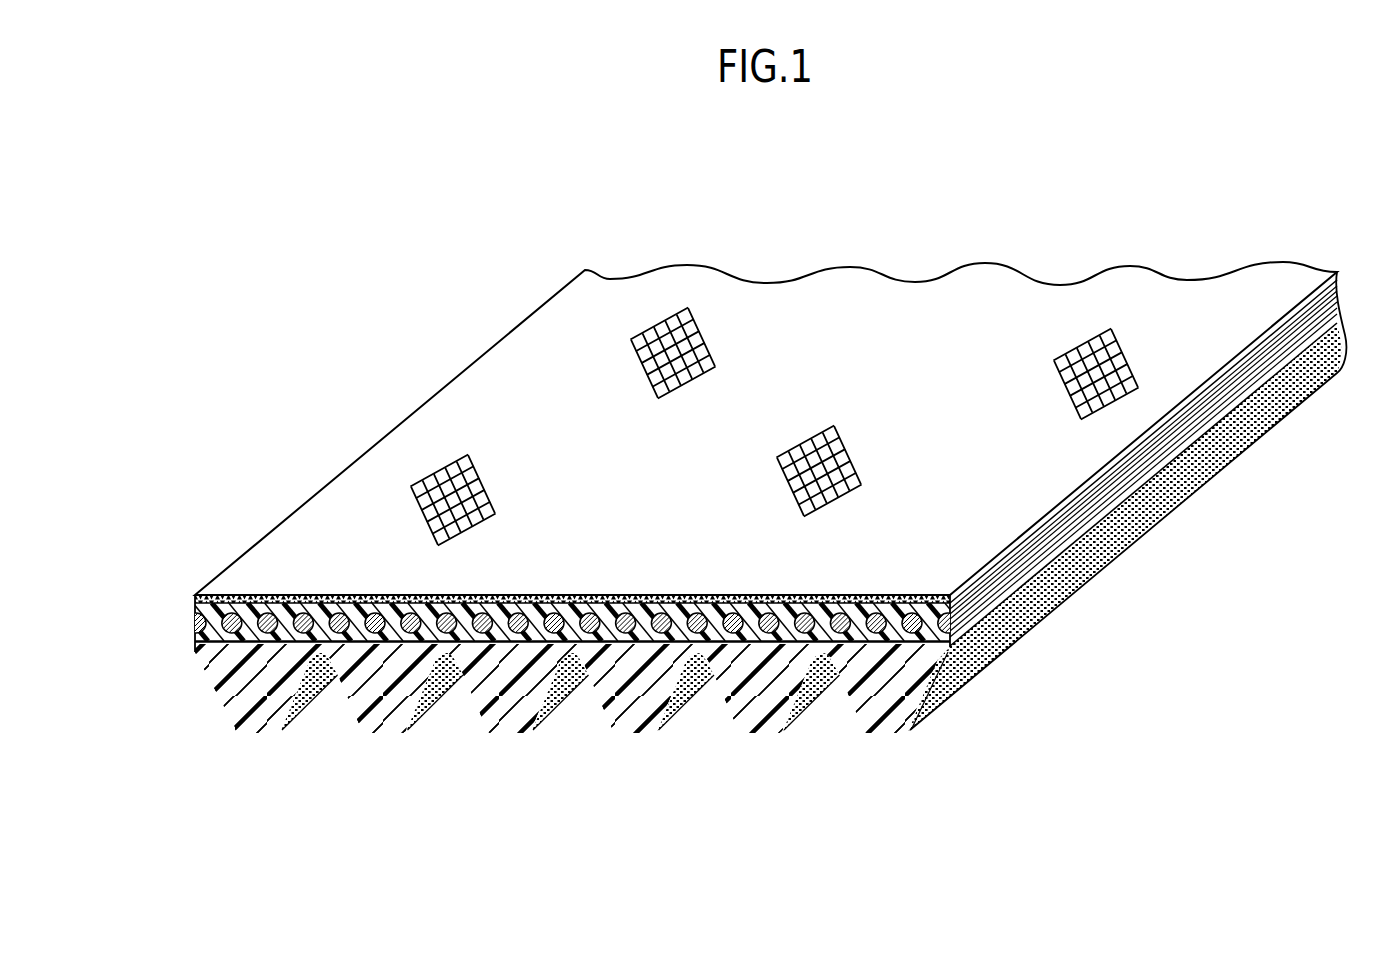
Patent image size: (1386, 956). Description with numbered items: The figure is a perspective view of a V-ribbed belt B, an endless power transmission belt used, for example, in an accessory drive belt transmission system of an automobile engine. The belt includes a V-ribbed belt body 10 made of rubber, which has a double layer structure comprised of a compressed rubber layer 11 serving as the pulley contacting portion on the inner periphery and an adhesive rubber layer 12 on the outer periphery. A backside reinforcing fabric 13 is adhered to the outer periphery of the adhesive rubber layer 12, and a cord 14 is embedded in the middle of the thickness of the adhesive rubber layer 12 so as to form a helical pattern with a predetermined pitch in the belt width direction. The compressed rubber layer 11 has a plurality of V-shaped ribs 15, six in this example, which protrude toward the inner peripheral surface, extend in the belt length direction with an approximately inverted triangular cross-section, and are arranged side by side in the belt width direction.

The V-ribbed belt B is at (593, 198).
The V-ribbed belt body 10 is at (440, 390).
The compressed rubber layer 11 is at (214, 683).
The adhesive rubber layer 12 is at (198, 634).
The backside reinforcing fabric 13 is at (629, 595).
The cord 14 is at (447, 613).
The V-shaped ribs 15 is at (263, 717).